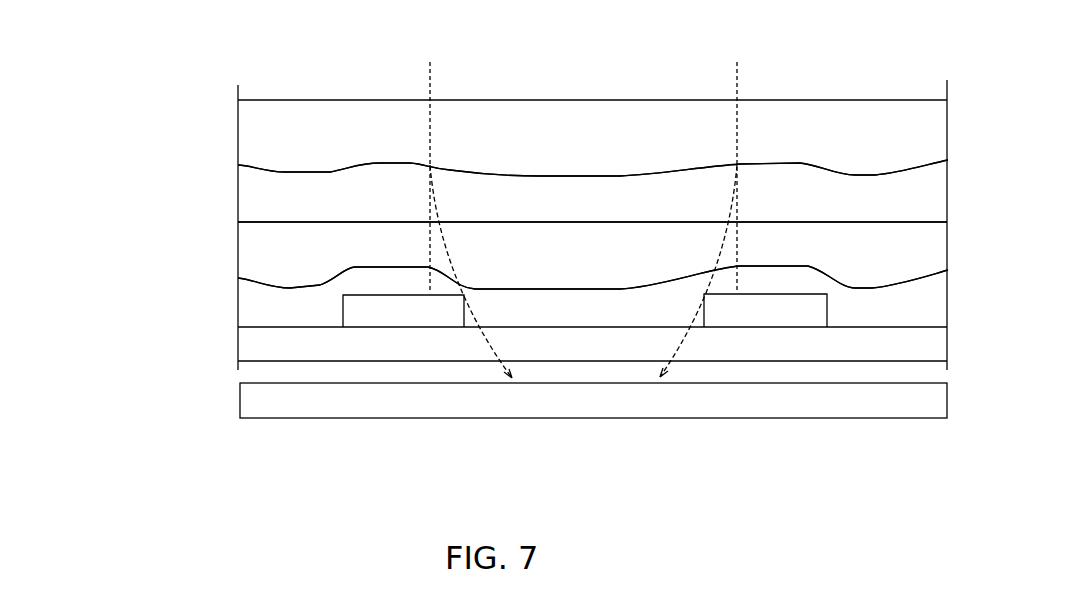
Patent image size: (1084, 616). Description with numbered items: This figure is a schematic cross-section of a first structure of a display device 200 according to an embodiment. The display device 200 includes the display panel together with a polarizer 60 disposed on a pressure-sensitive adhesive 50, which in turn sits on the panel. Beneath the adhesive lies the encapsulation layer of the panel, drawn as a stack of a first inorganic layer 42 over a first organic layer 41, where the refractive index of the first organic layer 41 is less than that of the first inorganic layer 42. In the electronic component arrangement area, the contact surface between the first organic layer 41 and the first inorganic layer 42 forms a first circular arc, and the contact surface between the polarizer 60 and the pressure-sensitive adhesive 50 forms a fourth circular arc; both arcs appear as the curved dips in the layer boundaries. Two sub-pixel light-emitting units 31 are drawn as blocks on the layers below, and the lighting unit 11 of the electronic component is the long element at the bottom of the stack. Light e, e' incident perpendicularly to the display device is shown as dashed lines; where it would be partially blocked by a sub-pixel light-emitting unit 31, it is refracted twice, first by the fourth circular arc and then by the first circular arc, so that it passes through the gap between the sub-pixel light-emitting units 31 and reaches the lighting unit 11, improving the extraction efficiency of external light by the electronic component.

The display device 200 is at (190, 34).
The polarizer 60 is at (272, 133).
The pressure-sensitive adhesive 50 is at (272, 192).
The first inorganic layer 42 is at (272, 240).
The first organic layer 41 is at (277, 296).
The sub-pixel light-emitting unit 31 is at (400, 311).
The lighting unit 11 is at (277, 405).
The light e is at (467, 205).
The light e' is at (706, 204).